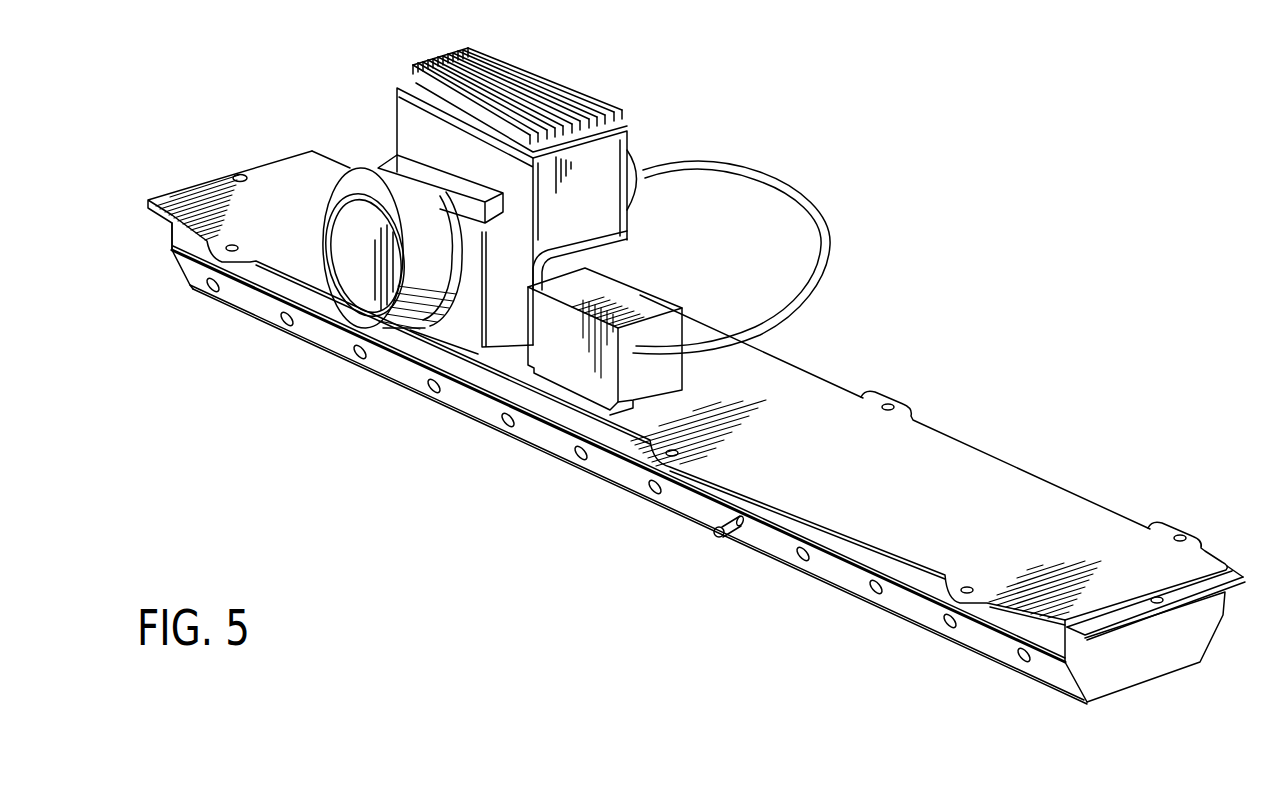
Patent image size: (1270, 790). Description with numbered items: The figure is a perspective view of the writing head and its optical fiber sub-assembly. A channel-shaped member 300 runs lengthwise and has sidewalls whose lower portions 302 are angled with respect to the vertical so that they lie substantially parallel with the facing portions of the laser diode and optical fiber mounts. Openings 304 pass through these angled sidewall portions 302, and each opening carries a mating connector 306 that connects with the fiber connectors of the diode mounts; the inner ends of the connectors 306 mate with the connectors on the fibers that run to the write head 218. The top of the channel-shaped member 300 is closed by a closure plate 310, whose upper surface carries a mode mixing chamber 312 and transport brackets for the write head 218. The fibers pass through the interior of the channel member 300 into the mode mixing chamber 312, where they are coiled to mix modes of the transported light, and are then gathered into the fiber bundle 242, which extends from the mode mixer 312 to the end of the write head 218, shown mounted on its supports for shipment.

The write head 218 is at (340, 250).
The fiber bundle 242 is at (816, 208).
The channel-shaped member 300 is at (1166, 678).
The lower portions of sidewalls 302 is at (590, 458).
The openings 304 is at (629, 477).
The mating connector 306 is at (715, 537).
The closure plate 310 is at (858, 471).
The mode mixing chamber 312 is at (580, 367).